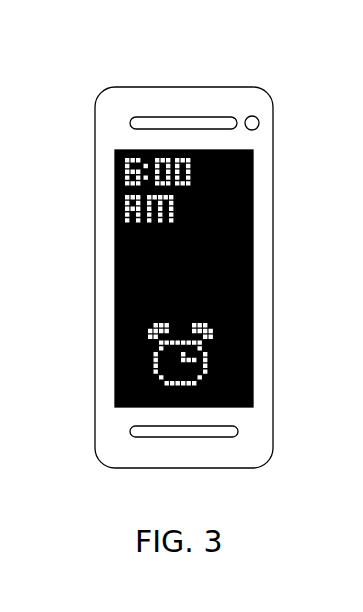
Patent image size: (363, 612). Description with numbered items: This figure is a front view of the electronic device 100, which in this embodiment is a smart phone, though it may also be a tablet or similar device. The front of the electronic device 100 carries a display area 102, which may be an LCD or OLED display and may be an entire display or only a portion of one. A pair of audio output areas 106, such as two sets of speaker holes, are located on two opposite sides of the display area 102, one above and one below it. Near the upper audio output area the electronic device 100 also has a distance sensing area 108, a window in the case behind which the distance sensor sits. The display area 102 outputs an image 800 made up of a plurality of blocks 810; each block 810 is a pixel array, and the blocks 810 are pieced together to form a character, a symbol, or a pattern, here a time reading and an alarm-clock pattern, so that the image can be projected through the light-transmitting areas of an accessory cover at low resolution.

The electronic device 100 is at (285, 85).
The display area 102 is at (253, 258).
The audio output areas 106 is at (162, 118).
The distance sensing area 108 is at (252, 116).
The image 800 is at (112, 147).
The blocks 810 is at (120, 160).